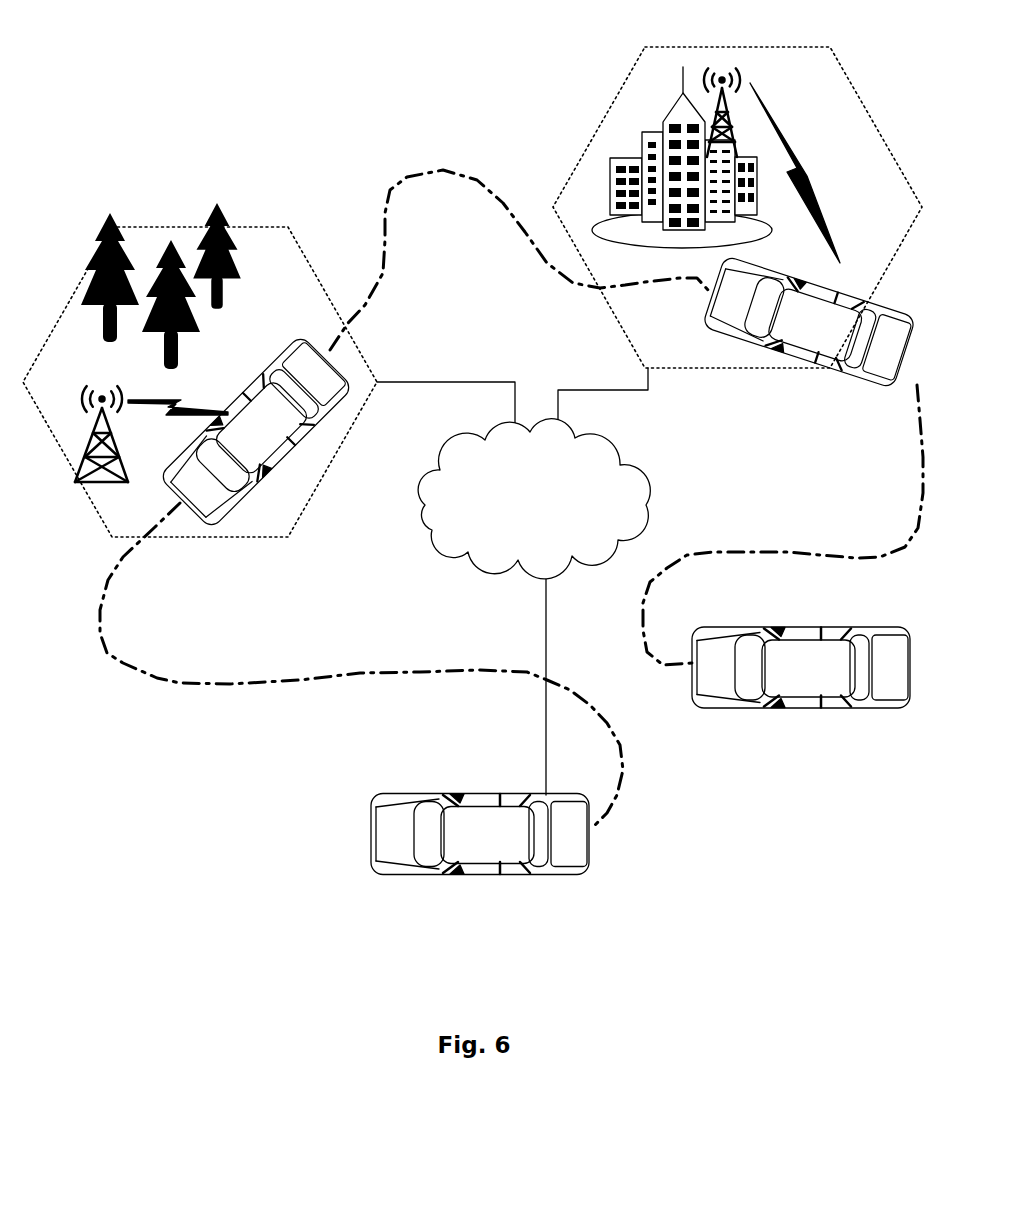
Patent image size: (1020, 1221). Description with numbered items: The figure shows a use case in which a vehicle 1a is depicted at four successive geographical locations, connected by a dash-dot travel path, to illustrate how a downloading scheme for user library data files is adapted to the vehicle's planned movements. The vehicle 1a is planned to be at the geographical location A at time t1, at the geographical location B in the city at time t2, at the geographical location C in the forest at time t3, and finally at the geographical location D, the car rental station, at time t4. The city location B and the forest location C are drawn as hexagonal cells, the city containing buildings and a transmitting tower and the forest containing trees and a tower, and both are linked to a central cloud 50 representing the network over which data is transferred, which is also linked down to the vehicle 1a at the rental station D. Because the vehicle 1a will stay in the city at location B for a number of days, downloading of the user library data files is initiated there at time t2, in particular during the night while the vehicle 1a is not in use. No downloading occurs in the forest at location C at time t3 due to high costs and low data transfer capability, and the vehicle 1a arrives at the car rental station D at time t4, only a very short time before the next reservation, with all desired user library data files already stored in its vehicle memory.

The vehicle 1a is at (537, 565).
The network / communication cloud 50 is at (534, 499).
The geographical location A is at (801, 738).
The geographical location B is at (737, 240).
The geographical location C is at (200, 400).
The geographical location D is at (488, 909).
The time t1 is at (891, 732).
The time t2 is at (857, 401).
The time t3 is at (274, 509).
The time t4 is at (567, 904).